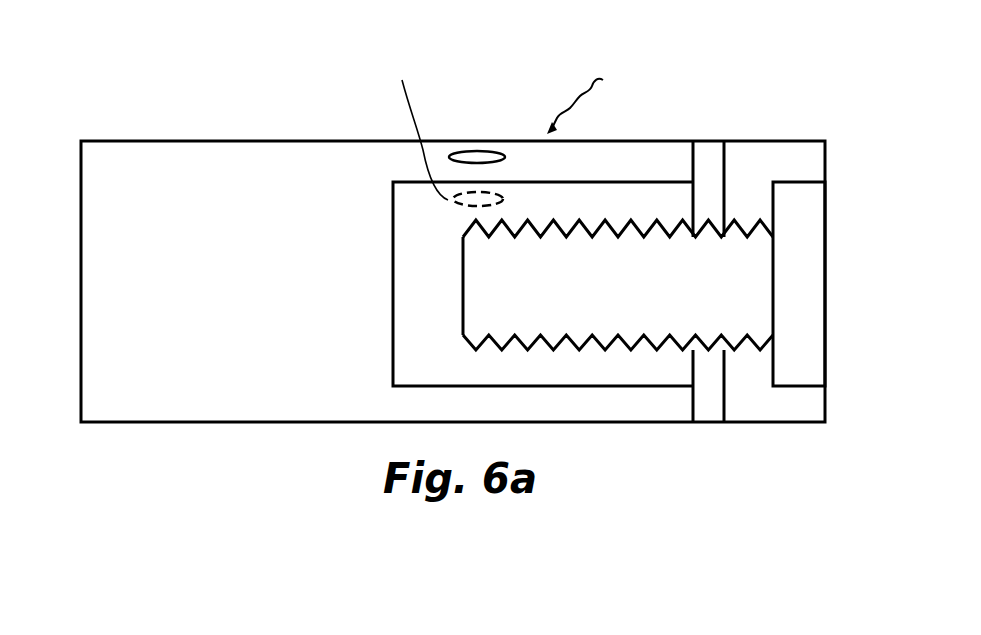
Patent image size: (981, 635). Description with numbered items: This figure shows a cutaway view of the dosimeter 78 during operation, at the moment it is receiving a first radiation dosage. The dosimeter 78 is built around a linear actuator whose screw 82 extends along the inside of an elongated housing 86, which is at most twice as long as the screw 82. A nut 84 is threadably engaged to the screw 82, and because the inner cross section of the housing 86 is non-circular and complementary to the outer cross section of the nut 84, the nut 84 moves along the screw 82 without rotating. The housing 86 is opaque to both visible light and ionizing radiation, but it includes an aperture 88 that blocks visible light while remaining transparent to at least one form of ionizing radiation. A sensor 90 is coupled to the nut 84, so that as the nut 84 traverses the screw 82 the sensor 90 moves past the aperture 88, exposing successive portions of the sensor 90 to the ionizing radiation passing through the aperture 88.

The dosimeter 78 is at (194, 437).
The screw 82 is at (757, 343).
The nut 84 is at (700, 139).
The elongated housing 86 is at (150, 141).
The aperture 88 is at (468, 151).
The sensor 90 is at (642, 387).